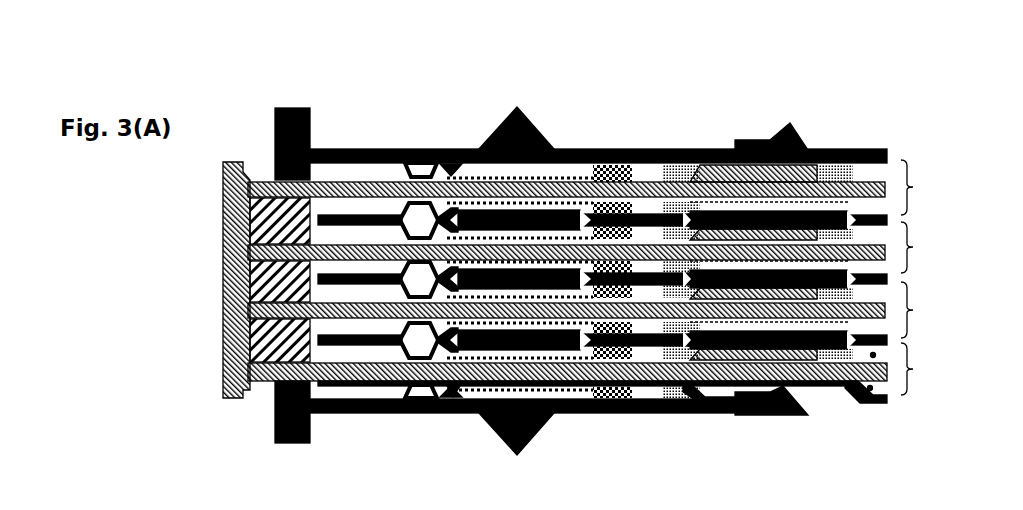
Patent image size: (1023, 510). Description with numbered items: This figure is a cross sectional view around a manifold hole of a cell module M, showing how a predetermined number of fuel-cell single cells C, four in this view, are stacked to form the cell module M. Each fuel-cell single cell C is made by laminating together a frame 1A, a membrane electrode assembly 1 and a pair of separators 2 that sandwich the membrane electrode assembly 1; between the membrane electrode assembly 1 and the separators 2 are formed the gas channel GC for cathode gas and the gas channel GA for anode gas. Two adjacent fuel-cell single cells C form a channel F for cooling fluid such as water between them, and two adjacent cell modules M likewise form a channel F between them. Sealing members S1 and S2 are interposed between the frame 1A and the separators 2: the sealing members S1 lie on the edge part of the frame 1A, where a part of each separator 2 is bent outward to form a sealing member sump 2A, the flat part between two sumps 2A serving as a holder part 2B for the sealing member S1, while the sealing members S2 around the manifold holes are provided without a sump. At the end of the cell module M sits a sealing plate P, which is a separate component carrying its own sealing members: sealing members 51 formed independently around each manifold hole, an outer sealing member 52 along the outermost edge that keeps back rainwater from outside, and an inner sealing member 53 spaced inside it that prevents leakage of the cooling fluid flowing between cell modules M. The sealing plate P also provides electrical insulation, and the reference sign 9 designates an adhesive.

The membrane electrode assembly 1 is at (495, 281).
The frame 1A is at (223, 185).
The separator 2 is at (358, 208).
The sealing member sump 2A is at (455, 148).
The holder part 2B is at (466, 148).
The adhesive 9 is at (262, 380).
The sealing member 51 is at (796, 127).
The outer sealing member 52 is at (283, 108).
The inner sealing member 53 is at (522, 105).
The sealing member S1 is at (641, 183).
The sealing member S2 is at (877, 198).
The sealing plate P is at (705, 150).
The fuel-cell single cell C is at (922, 369).
The cell module M is at (893, 153).
The channel for cooling fluid F is at (464, 400).
The gas channel for anode gas GA is at (870, 392).
The gas channel for cathode gas GC is at (875, 358).